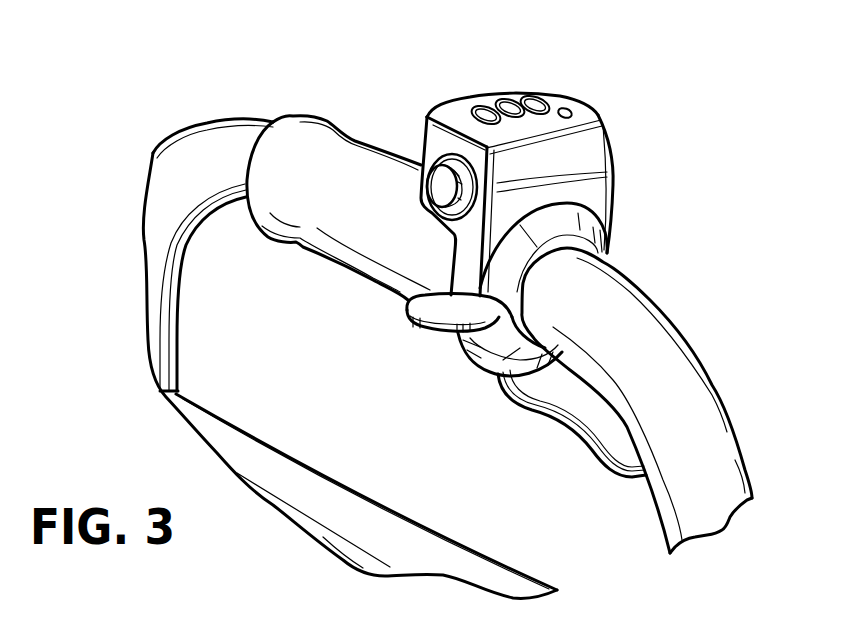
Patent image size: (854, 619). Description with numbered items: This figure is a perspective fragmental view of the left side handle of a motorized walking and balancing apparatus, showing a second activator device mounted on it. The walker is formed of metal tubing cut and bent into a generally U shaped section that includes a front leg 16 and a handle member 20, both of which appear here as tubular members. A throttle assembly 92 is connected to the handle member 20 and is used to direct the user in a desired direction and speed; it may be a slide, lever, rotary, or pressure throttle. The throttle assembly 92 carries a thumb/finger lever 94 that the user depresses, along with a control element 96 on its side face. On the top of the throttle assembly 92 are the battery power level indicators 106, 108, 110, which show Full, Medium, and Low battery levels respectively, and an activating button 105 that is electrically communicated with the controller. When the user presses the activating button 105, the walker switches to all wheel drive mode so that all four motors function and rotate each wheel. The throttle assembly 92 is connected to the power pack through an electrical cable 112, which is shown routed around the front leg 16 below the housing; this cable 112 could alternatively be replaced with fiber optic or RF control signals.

The front leg 16 is at (705, 455).
The handle member 20 is at (300, 148).
The throttle assembly 92 is at (587, 143).
The thumb/finger lever 94 is at (440, 310).
The control knob 96 is at (438, 190).
The activating button 105 is at (567, 110).
The battery power level indicator 106 is at (488, 110).
The battery power level indicator 108 is at (510, 103).
The battery power level indicator 110 is at (535, 100).
The electrical cable 112 is at (578, 433).